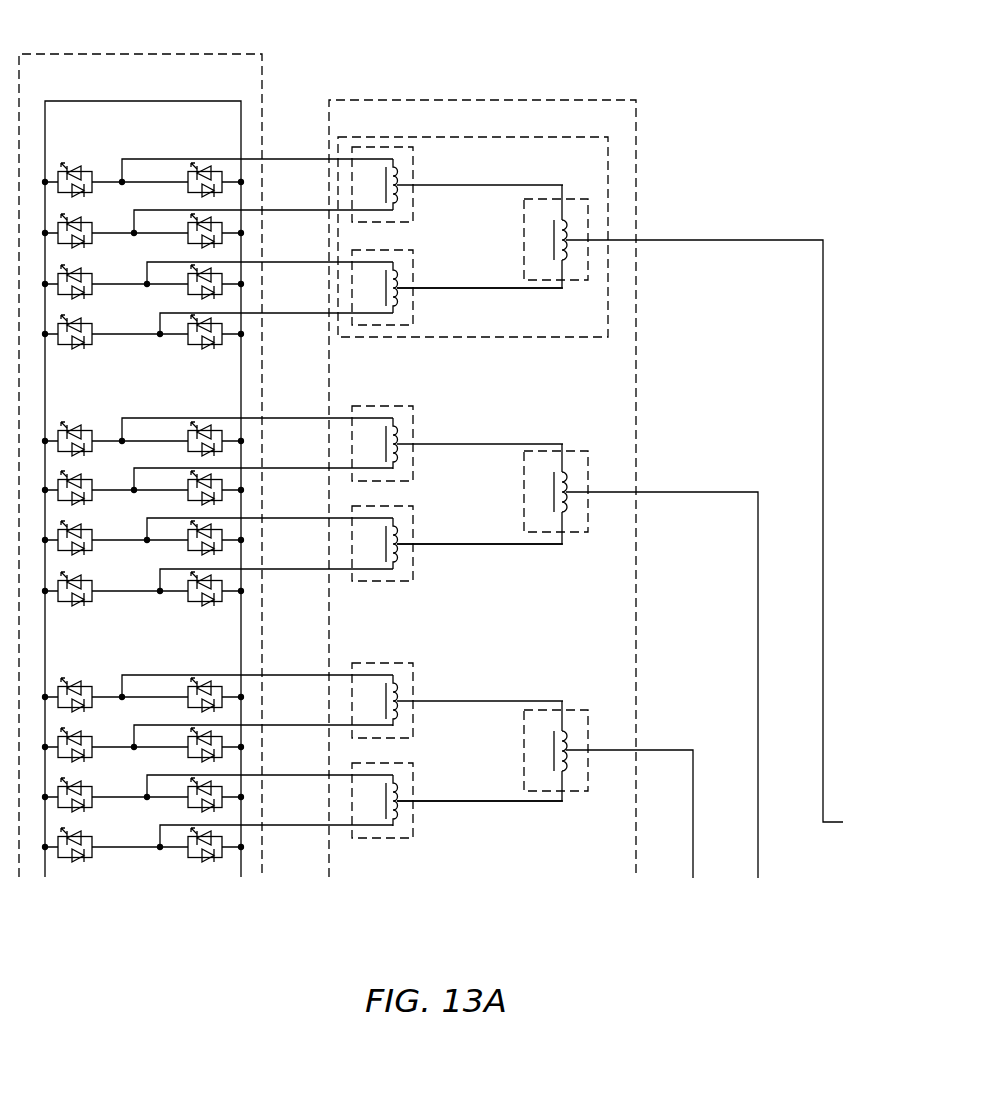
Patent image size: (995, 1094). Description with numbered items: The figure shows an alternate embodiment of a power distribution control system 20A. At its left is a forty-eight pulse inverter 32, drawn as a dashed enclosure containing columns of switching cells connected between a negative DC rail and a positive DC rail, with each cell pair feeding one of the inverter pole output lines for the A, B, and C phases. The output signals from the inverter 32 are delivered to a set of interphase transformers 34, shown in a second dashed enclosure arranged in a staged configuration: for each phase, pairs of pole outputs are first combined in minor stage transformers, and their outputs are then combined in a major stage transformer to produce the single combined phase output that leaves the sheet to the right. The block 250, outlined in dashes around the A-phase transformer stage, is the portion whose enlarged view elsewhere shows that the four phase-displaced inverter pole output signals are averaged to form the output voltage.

The power distribution control system 20A is at (783, 127).
The forty-eight pulse inverter 32 is at (185, 53).
The interphase transformers 34 is at (518, 98).
The block 250 is at (515, 327).